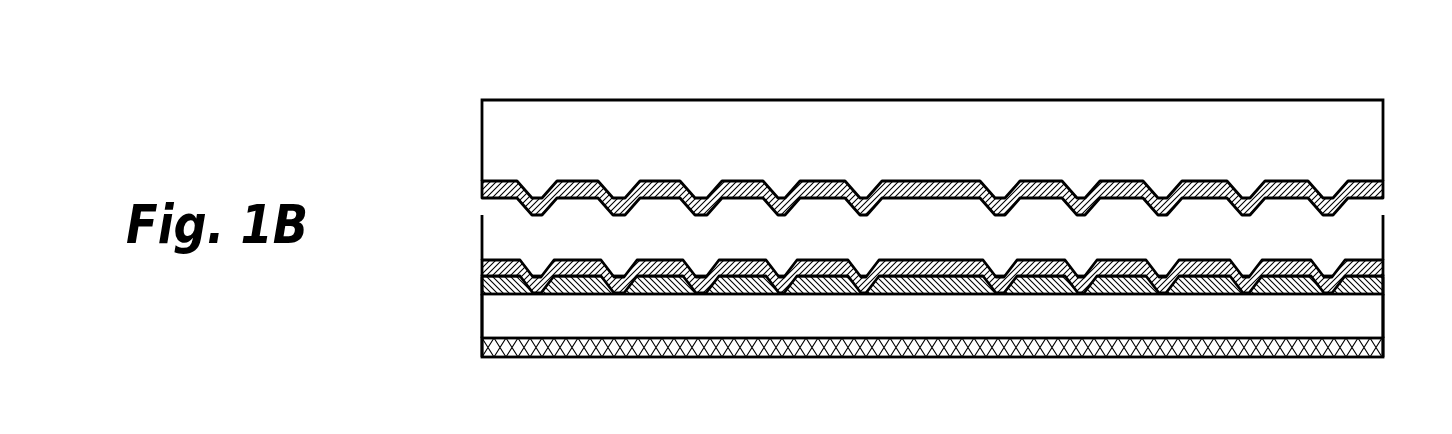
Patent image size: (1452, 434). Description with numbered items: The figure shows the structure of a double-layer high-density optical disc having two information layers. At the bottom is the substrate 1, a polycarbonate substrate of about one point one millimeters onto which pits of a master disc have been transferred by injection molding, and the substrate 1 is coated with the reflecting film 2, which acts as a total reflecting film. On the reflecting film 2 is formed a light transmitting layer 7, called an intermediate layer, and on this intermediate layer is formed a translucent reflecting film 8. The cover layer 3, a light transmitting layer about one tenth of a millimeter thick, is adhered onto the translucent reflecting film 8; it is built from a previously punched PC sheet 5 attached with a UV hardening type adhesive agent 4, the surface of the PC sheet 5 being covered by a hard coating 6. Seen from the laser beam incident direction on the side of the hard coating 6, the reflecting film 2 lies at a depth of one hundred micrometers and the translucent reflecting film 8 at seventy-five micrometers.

The substrate 1 is at (482, 161).
The reflecting film 2 is at (1383, 178).
The cover layer 3 is at (407, 268).
The UV hardening type adhesive agent 4 is at (482, 291).
The PC sheet 5 is at (482, 322).
The hard coating 6 is at (482, 352).
The light transmitting layer 7 is at (482, 250).
The translucent reflecting film 8 is at (1383, 258).